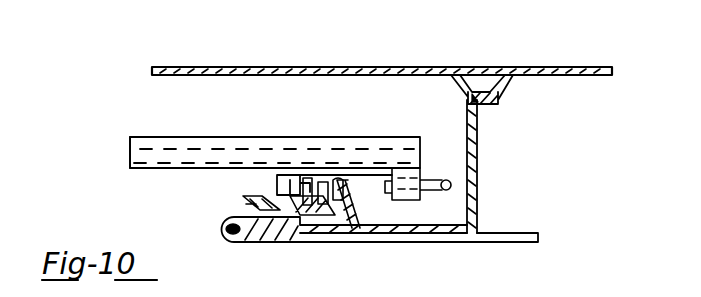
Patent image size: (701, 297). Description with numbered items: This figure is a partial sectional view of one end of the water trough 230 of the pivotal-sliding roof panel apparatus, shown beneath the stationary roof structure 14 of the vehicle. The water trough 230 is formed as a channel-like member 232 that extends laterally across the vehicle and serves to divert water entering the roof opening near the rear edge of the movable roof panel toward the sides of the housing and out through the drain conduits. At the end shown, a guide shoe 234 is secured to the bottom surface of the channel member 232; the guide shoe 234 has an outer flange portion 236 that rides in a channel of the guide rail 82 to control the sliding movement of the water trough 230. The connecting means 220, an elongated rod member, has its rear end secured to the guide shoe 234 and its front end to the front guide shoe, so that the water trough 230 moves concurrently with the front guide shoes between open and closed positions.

The stationary roof structure 14 is at (560, 66).
The connecting means 220 is at (450, 177).
The water trough 230 is at (306, 105).
The channel-like member 232 is at (147, 137).
The guide shoe 234 is at (277, 184).
The outer flange portion 236 is at (308, 196).
The guide rail 82 is at (287, 203).